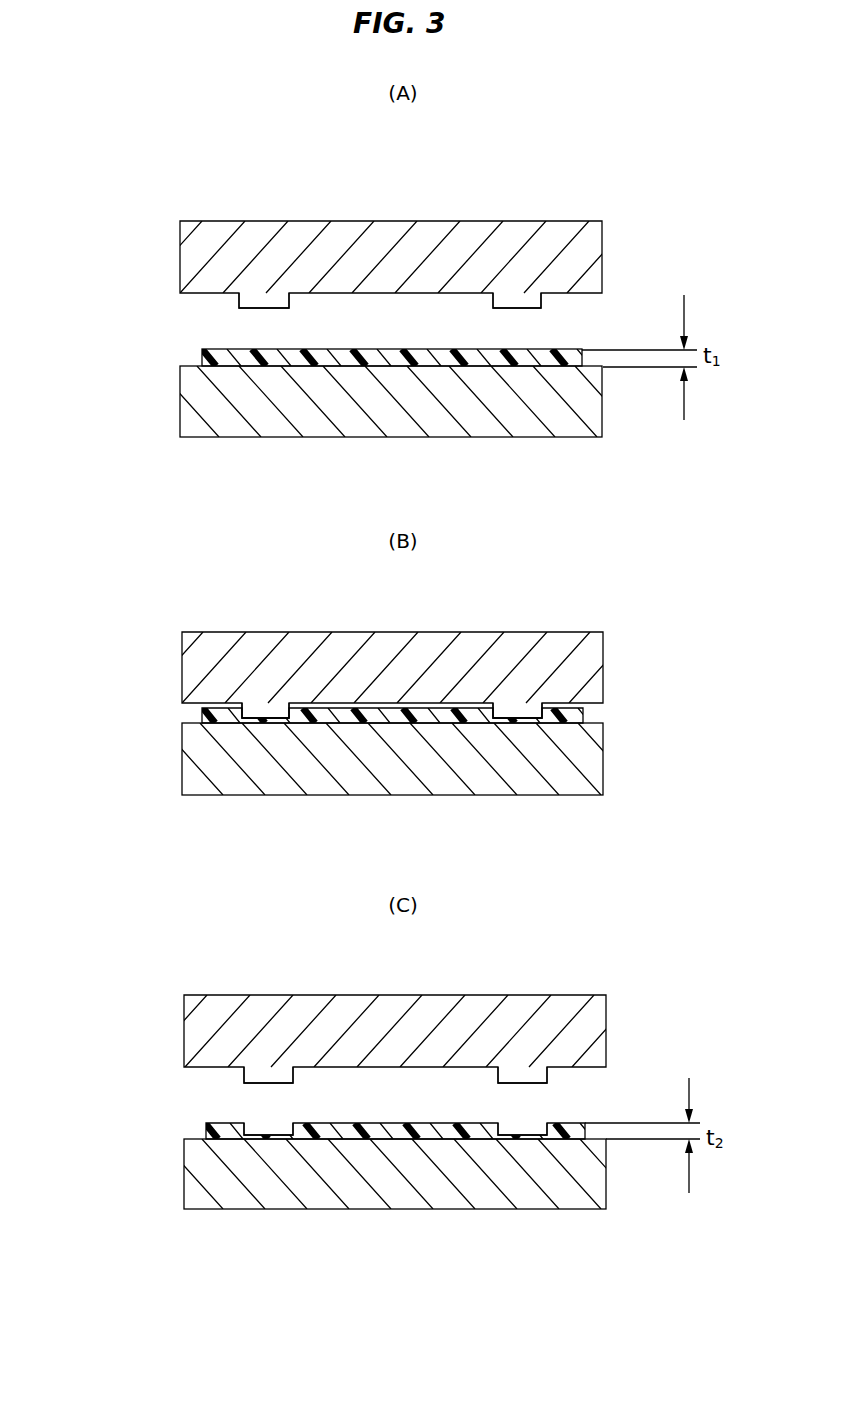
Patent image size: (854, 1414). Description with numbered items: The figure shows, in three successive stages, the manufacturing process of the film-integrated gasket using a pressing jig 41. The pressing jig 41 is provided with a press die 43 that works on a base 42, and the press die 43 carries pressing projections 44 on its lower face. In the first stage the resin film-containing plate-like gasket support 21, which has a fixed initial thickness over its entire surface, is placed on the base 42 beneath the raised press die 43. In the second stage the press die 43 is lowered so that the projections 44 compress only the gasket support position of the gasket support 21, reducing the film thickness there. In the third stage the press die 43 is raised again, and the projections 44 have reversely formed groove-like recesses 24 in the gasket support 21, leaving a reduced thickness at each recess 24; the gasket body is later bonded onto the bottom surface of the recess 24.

The pressing jig 41 is at (176, 239).
The base 42 is at (563, 422).
The press die 43 is at (563, 235).
The pressing projection 44 is at (265, 302).
The gasket support 21 is at (540, 350).
The recess 24 is at (259, 1124).